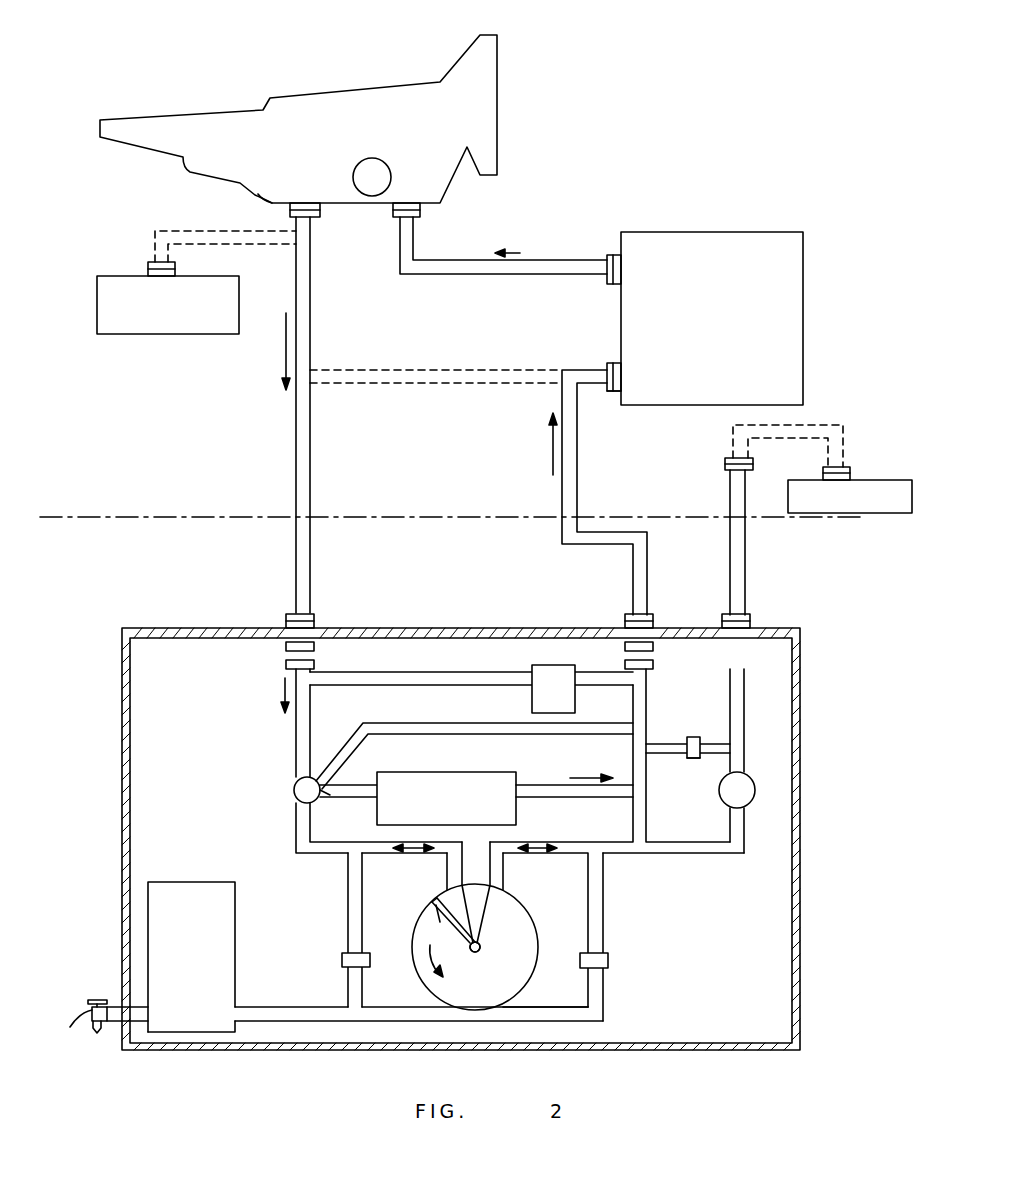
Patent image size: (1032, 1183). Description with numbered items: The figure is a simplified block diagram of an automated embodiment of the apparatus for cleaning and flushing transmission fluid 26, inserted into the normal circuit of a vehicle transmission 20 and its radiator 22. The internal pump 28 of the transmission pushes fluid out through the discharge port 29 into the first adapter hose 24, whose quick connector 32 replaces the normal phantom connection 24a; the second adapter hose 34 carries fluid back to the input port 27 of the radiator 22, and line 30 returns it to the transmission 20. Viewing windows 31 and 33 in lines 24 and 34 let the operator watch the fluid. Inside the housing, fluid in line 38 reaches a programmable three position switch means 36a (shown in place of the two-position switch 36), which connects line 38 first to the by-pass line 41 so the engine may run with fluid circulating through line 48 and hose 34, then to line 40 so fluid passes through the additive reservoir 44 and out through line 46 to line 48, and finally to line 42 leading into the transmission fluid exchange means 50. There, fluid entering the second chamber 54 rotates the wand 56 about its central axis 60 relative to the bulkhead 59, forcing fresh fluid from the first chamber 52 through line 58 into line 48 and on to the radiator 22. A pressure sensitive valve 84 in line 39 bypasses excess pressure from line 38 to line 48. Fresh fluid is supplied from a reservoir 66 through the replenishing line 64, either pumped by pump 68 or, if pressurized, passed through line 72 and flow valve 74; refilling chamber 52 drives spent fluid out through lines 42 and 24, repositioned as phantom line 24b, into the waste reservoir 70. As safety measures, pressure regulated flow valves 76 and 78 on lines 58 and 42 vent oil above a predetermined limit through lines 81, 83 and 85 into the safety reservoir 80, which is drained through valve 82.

The vehicle transmission 20 is at (326, 84).
The transmission fluid cooler (radiator) 22 is at (686, 222).
The first fluid line (first adapter hose) 24 is at (296, 410).
The phantom line 24a is at (406, 370).
The phantom line 24b is at (180, 230).
The apparatus for cleaning and flushing the transmission fluid 26 is at (233, 612).
The input port 27 is at (614, 392).
The pump 28 is at (376, 160).
The discharge port 29 is at (278, 213).
The line 30 is at (492, 285).
The viewing window 31 is at (286, 652).
The quick connectors 32 is at (317, 218).
The viewing window 33 is at (653, 652).
The second adapter hose 34 is at (597, 545).
The two-position switch 36 is at (294, 782).
The switch means (three position switch) 36a is at (318, 800).
The line 38 is at (296, 732).
The line 39 is at (395, 672).
The line 40 is at (360, 785).
The by-pass line 41 is at (387, 723).
The line 42 is at (296, 820).
The additive reservoir 44 is at (403, 772).
The line 46 is at (535, 797).
The line 48 is at (633, 693).
The transmission fluid exchange means 50 is at (525, 897).
The first compartment or chamber 52 is at (495, 959).
The second compartment or chamber 54 is at (441, 894).
The wand 56 is at (436, 936).
The line 58 is at (568, 875).
The bulkhead 59 is at (482, 910).
The central axis 60 is at (465, 955).
The replenishing line 64 is at (746, 555).
The reservoir of fresh transmission fluid 66 is at (888, 480).
The pump 68 is at (719, 790).
The external (waste) reservoir 70 is at (194, 336).
The line 72 is at (667, 740).
The flow valve 74 is at (696, 760).
The pressure regulated flow valve 76 is at (608, 962).
The pressure regulated flow valve 78 is at (342, 958).
The safety reservoir 80 is at (215, 882).
The line 81 is at (603, 898).
The valve 82 is at (86, 1020).
The line 83 is at (348, 907).
The pressure sensitive valve 84 is at (532, 692).
The line 85 is at (537, 1007).